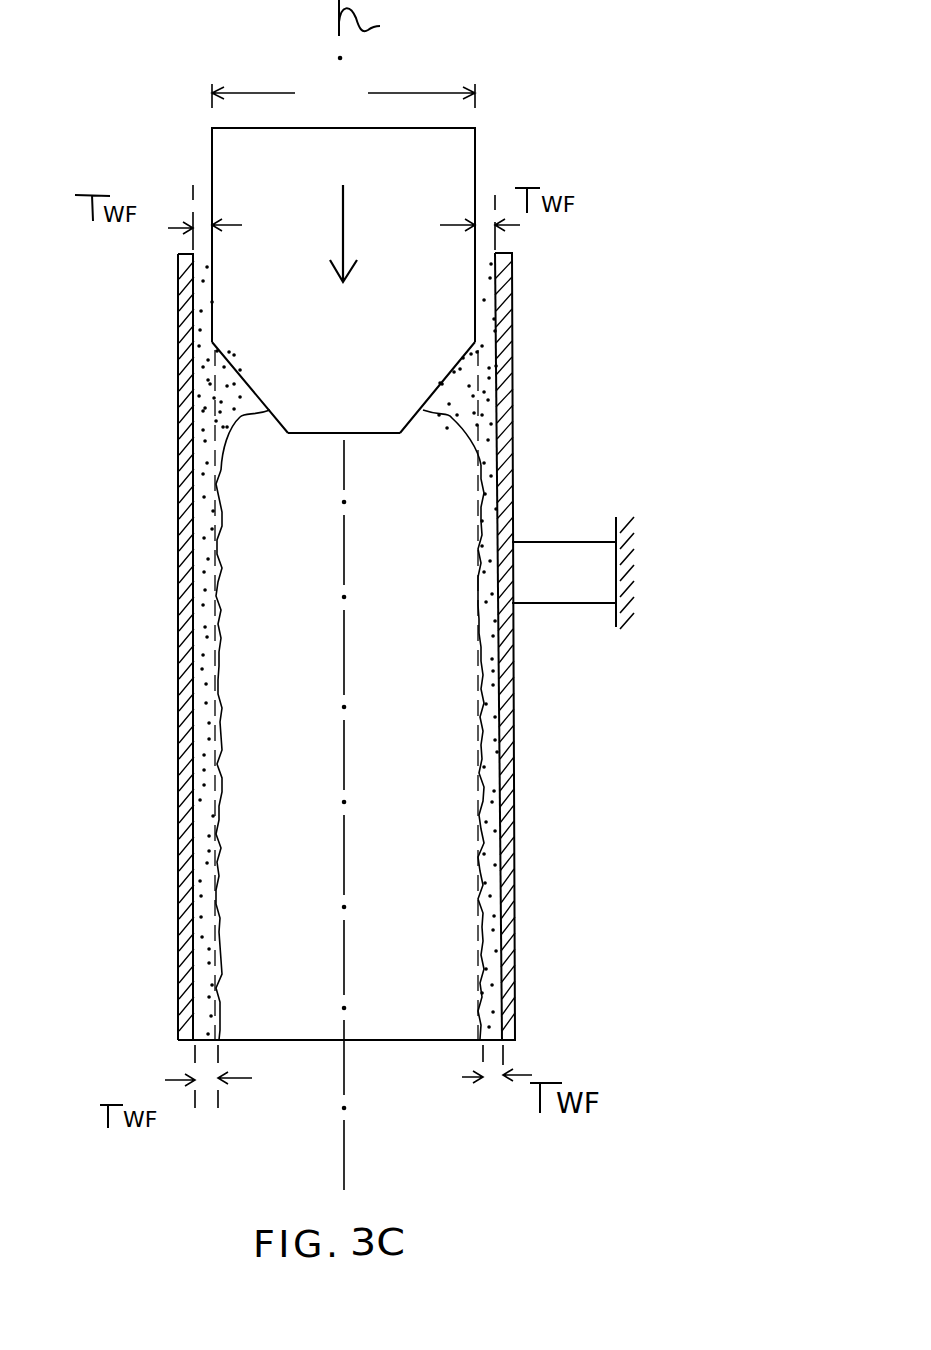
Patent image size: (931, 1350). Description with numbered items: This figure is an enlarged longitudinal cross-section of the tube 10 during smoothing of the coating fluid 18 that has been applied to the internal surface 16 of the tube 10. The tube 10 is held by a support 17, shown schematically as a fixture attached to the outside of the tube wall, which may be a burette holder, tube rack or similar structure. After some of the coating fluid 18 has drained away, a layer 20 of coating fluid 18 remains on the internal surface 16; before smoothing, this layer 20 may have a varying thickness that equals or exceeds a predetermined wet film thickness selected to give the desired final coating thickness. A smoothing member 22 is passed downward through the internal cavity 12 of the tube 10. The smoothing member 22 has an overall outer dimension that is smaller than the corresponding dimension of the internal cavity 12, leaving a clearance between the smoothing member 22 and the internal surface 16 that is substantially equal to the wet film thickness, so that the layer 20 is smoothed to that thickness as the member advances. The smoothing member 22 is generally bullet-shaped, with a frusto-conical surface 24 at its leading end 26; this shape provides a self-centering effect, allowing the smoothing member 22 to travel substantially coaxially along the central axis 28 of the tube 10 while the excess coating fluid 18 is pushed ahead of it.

The tube 10 is at (512, 318).
The internal cavity 12 is at (382, 815).
The internal surface 16 is at (198, 683).
The support 17 is at (543, 603).
The coating fluid 18 is at (202, 613).
The layer of coating fluid 20 is at (222, 587).
The smoothing member 22 is at (475, 150).
The frusto-conical surface 24 is at (253, 390).
The leading end 26 is at (334, 470).
The central axis 28 is at (381, 29).